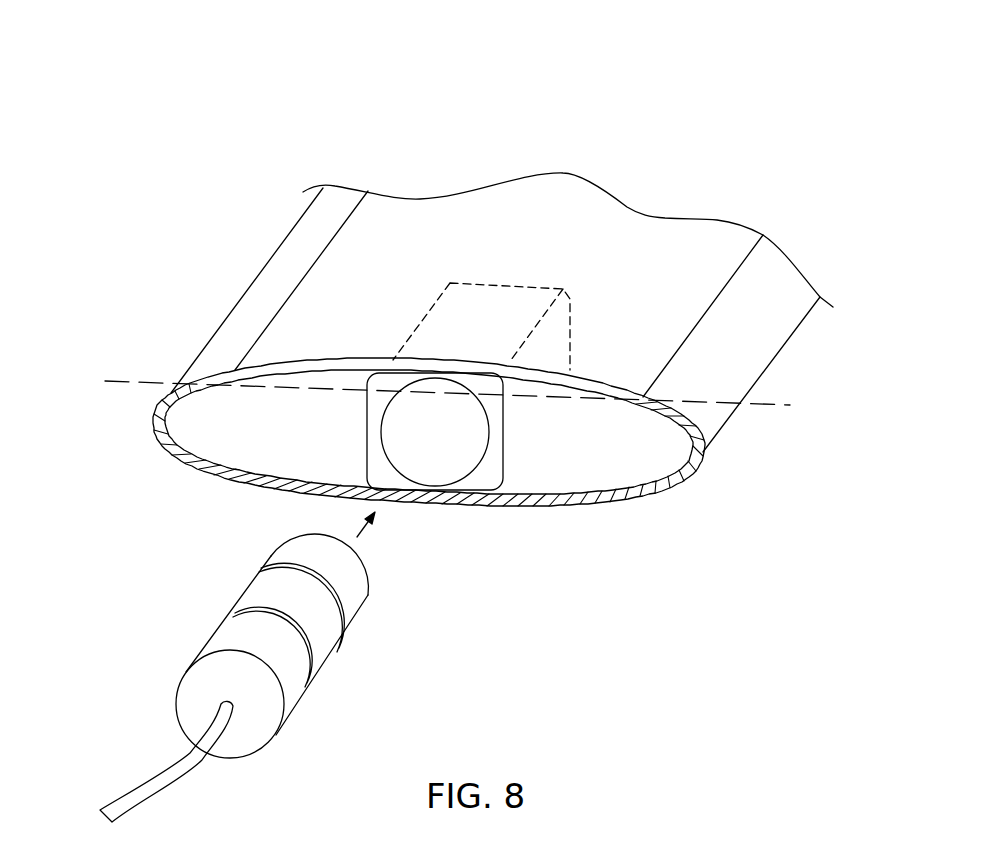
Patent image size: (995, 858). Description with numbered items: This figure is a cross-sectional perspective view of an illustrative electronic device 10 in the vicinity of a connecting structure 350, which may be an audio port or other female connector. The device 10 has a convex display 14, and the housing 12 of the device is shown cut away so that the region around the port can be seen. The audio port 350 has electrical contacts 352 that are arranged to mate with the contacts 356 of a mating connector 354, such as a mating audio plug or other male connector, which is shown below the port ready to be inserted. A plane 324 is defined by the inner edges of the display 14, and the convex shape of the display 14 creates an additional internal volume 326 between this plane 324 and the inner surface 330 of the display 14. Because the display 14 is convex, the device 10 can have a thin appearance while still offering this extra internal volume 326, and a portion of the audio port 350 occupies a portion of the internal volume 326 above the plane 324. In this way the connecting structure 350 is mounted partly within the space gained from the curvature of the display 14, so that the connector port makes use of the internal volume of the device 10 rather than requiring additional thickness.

The electronic device 10 is at (224, 57).
The housing 12 is at (700, 452).
The display 14 is at (585, 380).
The plane 324 is at (450, 395).
The internal volume 326 is at (307, 378).
The inner surface of display 330 is at (628, 387).
The connecting structure 350 is at (497, 485).
The electrical contacts 352 is at (392, 415).
The mating connector 354 is at (293, 688).
The contacts 356 is at (259, 571).